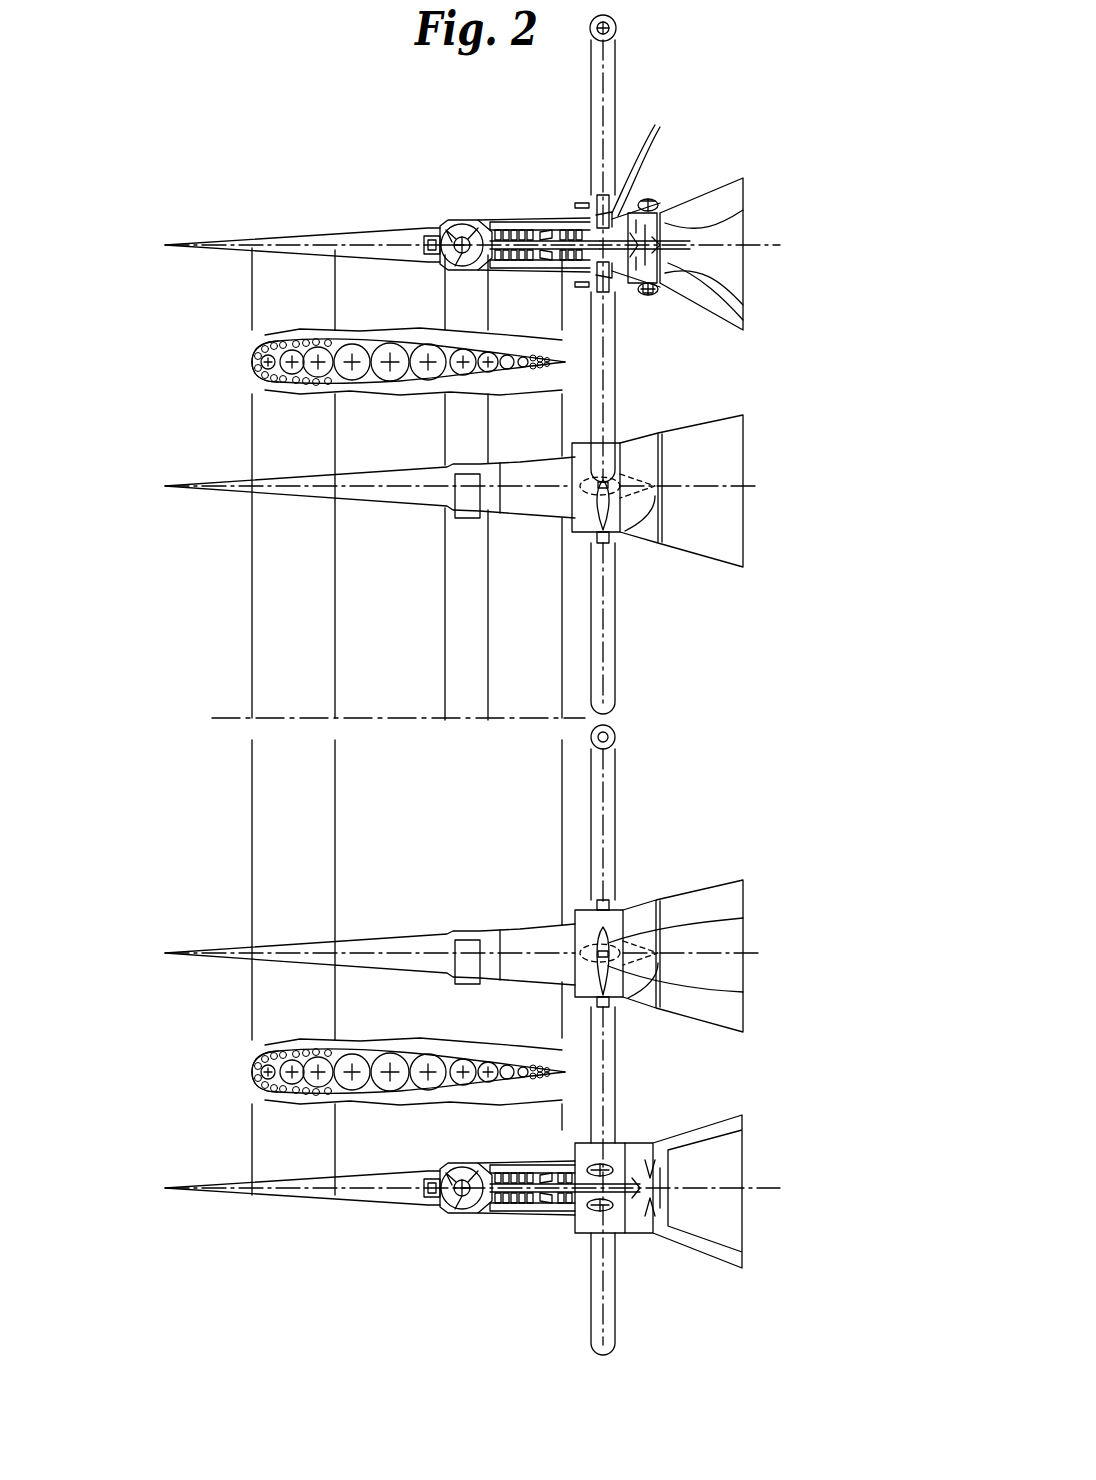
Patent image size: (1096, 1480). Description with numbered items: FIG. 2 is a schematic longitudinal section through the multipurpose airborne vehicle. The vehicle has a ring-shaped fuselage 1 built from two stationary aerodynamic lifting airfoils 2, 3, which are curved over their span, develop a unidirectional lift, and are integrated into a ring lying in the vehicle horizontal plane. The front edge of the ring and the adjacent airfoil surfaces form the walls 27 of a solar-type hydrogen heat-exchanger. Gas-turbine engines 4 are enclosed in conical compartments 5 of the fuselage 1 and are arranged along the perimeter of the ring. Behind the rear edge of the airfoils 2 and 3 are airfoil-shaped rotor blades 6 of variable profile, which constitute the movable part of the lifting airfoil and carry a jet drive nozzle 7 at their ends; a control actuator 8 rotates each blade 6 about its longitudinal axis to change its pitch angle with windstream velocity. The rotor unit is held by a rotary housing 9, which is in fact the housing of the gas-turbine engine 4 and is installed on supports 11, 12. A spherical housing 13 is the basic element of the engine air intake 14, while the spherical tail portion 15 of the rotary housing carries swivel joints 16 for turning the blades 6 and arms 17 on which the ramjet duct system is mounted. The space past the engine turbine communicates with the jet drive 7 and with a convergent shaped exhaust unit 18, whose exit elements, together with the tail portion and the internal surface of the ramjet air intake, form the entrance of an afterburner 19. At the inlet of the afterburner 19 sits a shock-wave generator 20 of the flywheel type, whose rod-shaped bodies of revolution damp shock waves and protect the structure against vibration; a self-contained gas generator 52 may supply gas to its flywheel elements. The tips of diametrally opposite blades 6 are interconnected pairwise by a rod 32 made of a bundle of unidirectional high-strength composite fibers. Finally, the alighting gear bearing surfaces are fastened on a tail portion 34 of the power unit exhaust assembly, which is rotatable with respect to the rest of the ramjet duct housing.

The fuselage 1 is at (352, 525).
The aerodynamic lifting airfoil 2 is at (330, 381).
The aerodynamic lifting airfoil 3 is at (330, 1045).
The gas-turbine engine 4 is at (523, 210).
The conical compartment 5 is at (392, 230).
The rotor blade 6 is at (743, 992).
The nozzle 7 is at (743, 918).
The control actuator 8 is at (673, 330).
The rotary housing 9 is at (506, 202).
The support 11 is at (458, 224).
The support 12 is at (541, 199).
The spherical housing 13 is at (461, 1221).
The air intake 14 is at (426, 1189).
The tail portion 15 is at (566, 1218).
The swivel joint 16 is at (649, 160).
The arm 17 is at (573, 209).
The exhaust unit 18 is at (677, 209).
The afterburner 19 is at (736, 254).
The shock-wave generator 20 is at (737, 286).
The wall 27 is at (262, 372).
The rod 32 is at (738, 299).
The tail portion 34 is at (715, 540).
The self-contained gas generator 52 is at (432, 246).